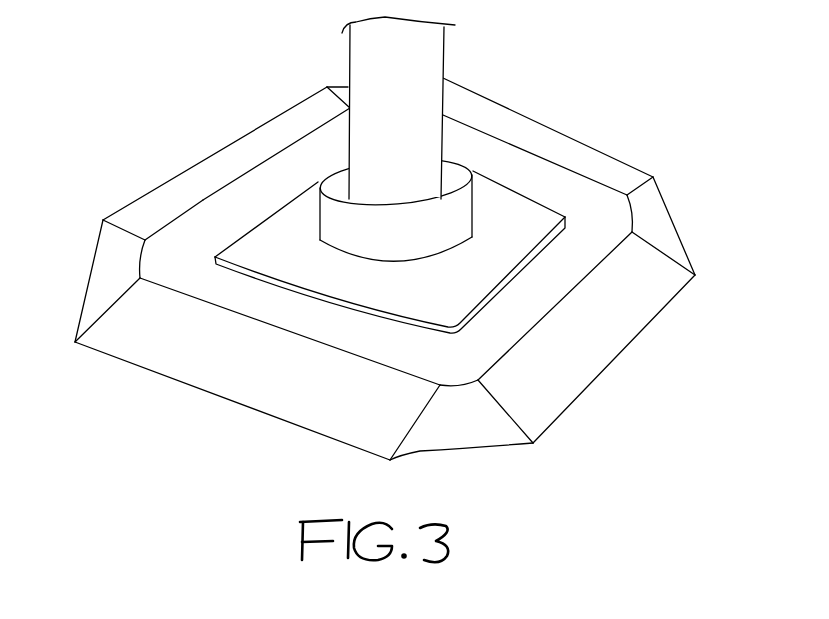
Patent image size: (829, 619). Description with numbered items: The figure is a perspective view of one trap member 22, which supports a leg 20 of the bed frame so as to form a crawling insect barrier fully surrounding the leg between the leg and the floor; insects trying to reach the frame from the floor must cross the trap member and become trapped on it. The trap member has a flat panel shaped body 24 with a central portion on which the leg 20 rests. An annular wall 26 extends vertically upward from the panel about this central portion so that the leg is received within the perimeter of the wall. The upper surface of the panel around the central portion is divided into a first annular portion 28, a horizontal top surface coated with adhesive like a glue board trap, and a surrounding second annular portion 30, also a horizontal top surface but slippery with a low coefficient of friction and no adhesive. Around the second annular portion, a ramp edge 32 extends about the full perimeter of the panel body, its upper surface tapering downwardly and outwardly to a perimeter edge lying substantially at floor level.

The leg 20 is at (418, 65).
The trap member 22 is at (668, 124).
The panel shaped body 24 is at (646, 359).
The annular wall 26 is at (473, 215).
The first annular portion 28 is at (480, 283).
The second annular portion 30 is at (585, 253).
The ramp edge 32 is at (585, 362).